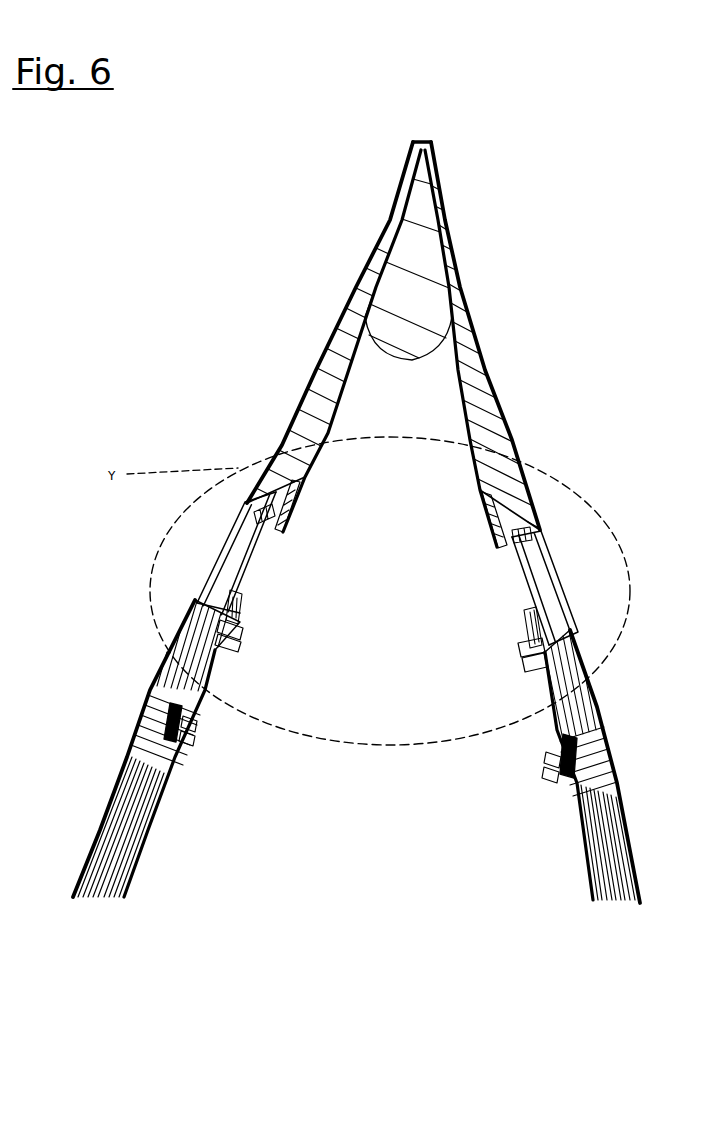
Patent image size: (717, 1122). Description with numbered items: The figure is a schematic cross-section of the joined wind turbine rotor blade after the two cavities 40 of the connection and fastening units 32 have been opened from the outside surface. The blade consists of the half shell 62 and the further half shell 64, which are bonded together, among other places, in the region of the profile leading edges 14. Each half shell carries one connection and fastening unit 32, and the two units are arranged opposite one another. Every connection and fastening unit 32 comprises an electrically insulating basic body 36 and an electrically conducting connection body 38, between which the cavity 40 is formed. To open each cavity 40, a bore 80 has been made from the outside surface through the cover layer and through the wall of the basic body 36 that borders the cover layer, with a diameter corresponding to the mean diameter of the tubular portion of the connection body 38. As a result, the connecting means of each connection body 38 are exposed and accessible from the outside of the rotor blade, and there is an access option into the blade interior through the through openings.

The profile leading edge 14 is at (432, 147).
The connection and fastening unit 32 is at (277, 583).
The basic body 36 is at (205, 623).
The connection body 38 is at (237, 613).
The cavity 40 is at (235, 568).
The half shell 62 is at (288, 370).
The further half shell 64 is at (522, 400).
The bore 80 is at (237, 518).